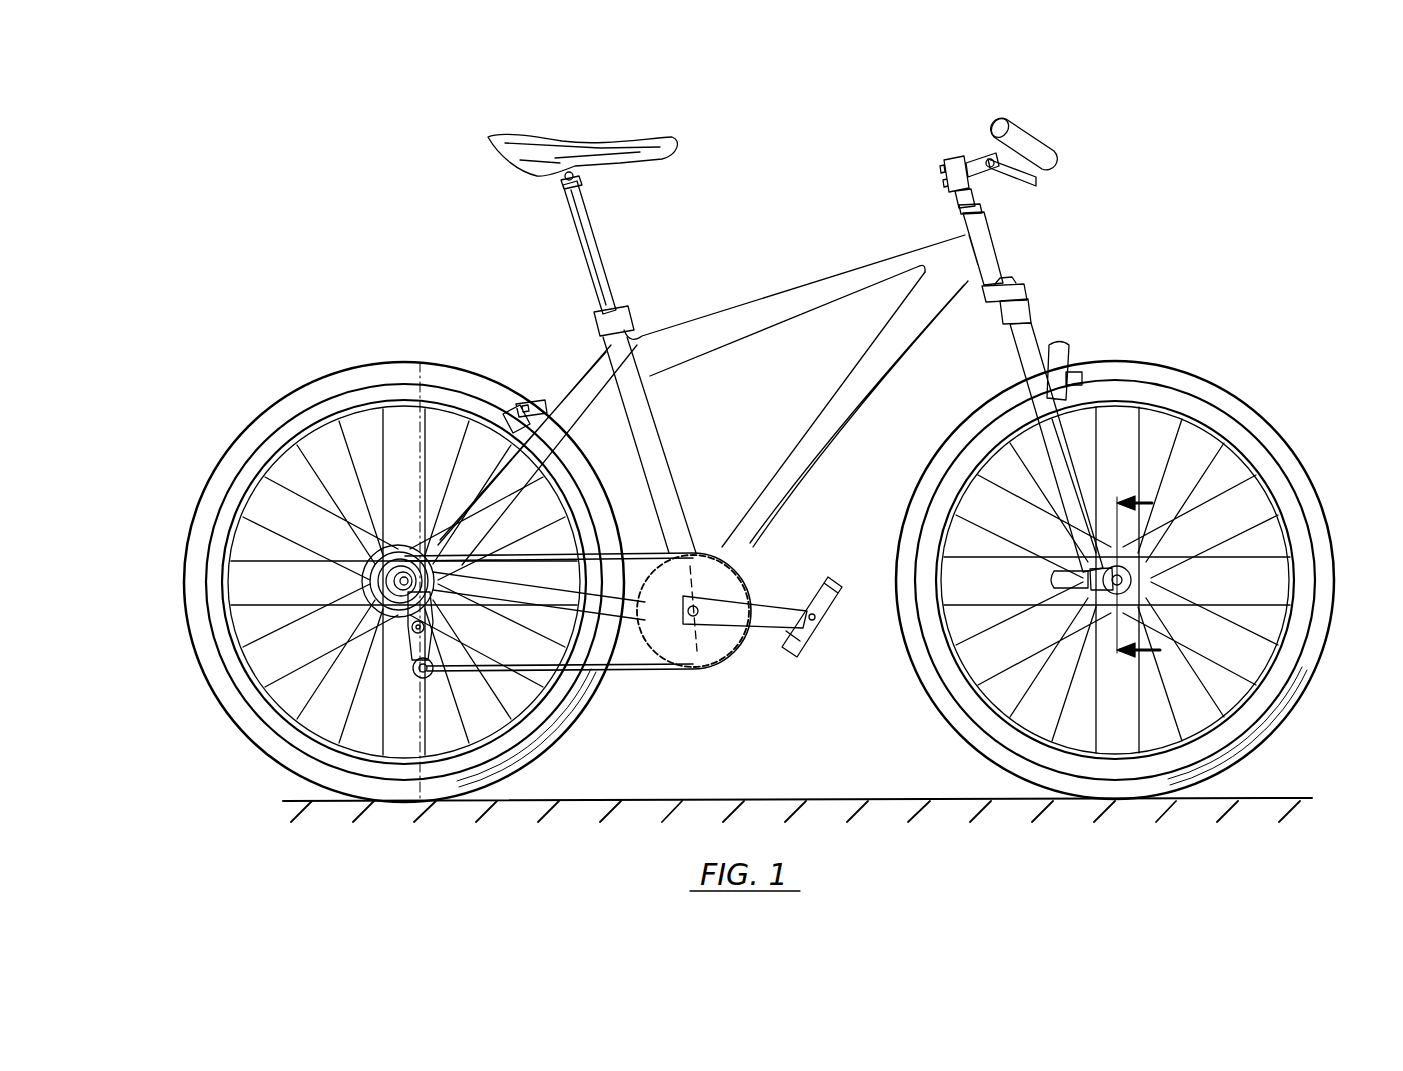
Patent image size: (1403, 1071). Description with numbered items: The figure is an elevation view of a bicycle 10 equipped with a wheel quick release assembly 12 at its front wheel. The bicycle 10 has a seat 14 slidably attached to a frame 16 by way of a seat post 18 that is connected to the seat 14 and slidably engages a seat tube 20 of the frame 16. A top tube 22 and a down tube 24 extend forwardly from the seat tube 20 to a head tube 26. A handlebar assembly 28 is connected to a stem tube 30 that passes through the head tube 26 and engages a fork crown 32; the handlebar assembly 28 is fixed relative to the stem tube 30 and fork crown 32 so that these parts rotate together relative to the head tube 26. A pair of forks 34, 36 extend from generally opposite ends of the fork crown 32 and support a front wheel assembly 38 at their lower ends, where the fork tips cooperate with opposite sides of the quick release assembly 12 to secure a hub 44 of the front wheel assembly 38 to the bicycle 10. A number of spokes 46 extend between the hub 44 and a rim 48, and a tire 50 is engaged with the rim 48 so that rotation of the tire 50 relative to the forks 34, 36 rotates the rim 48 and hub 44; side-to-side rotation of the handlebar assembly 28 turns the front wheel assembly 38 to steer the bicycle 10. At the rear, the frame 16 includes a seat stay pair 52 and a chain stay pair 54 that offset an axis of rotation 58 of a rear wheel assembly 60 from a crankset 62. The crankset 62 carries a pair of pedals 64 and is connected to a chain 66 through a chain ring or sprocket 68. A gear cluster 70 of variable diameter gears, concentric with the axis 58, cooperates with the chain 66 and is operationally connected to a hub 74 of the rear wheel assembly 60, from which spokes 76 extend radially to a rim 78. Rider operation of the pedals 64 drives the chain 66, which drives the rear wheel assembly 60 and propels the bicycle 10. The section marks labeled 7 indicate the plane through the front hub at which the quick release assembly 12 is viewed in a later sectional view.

The bicycle 10 is at (897, 126).
The wheel quick release assembly 12 is at (1060, 604).
The seat 14 is at (590, 148).
The frame 16 is at (772, 290).
The seat post 18 is at (588, 232).
The seat tube 20 is at (660, 420).
The top tube 22 is at (768, 314).
The down tube 24 is at (845, 398).
The head tube 26 is at (986, 246).
The handlebar assembly 28 is at (1030, 146).
The stem tube 30 is at (962, 196).
The fork crown 32 is at (1018, 306).
The fork 34 is at (1035, 338).
The fork 36 is at (1094, 430).
The front wheel assembly 38 is at (1302, 410).
The hub 44 is at (1145, 565).
The spokes 46 is at (1242, 560).
The rim 48 is at (1322, 500).
The tire 50 is at (1300, 530).
The seat stay pair 52 is at (585, 386).
The chain stay pair 54 is at (555, 585).
The axis of rotation 58 is at (398, 580).
The rear wheel assembly 60 is at (380, 356).
The crankset 62 is at (697, 680).
The pedals 64 is at (797, 656).
The chain 66 is at (628, 668).
The chain ring or sprocket 68 is at (737, 583).
The gear cluster 70 is at (352, 540).
The hub 74 is at (392, 592).
The spokes 76 is at (278, 690).
The rim 78 is at (220, 628).
The section line 7- 7 is at (1135, 574).